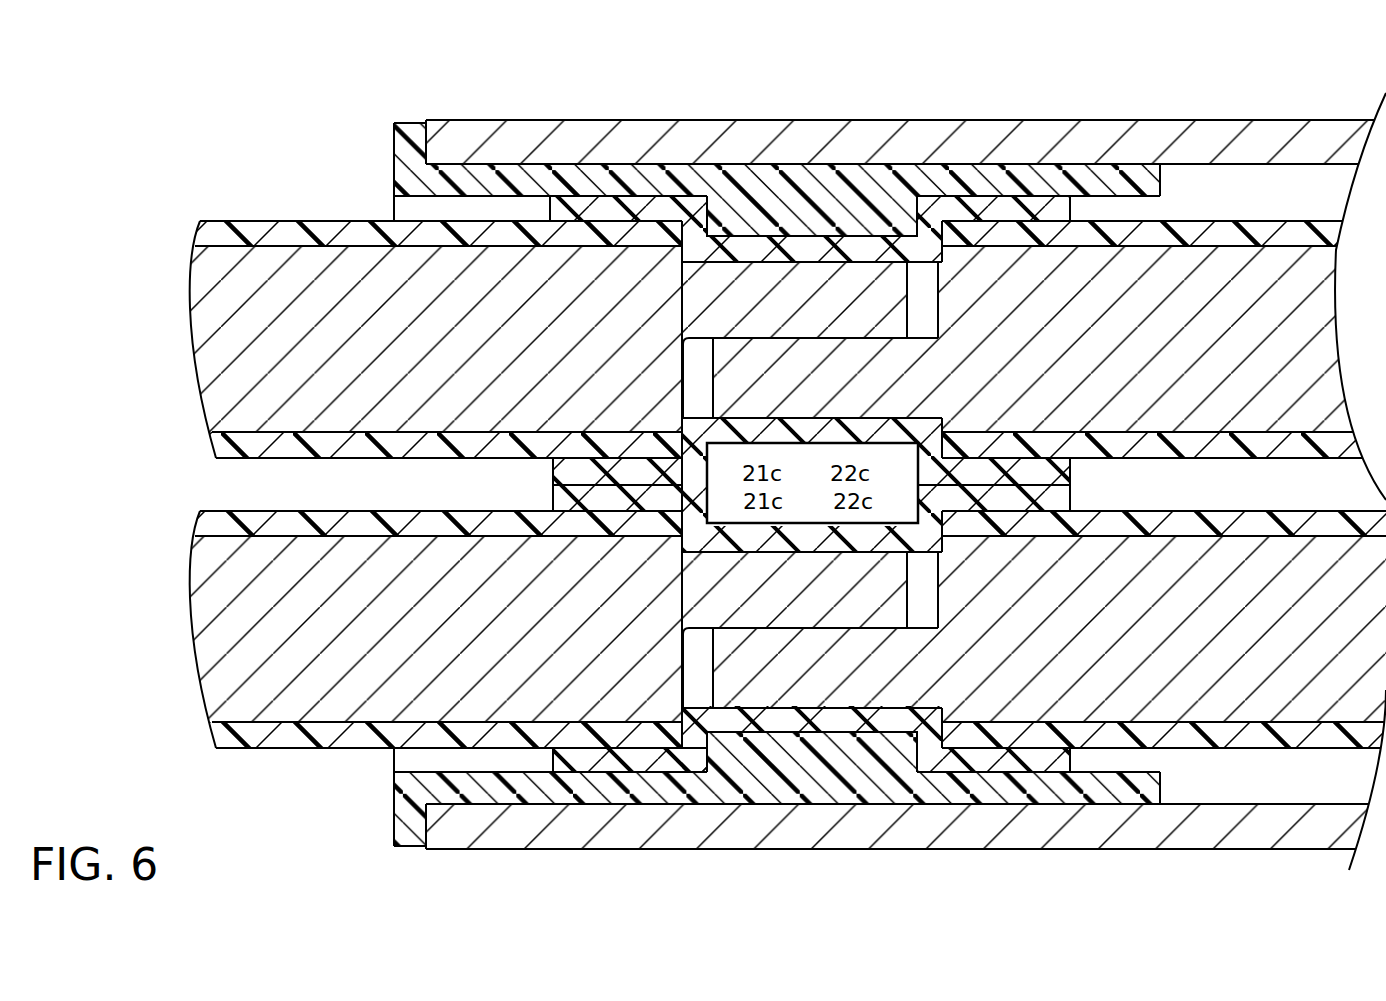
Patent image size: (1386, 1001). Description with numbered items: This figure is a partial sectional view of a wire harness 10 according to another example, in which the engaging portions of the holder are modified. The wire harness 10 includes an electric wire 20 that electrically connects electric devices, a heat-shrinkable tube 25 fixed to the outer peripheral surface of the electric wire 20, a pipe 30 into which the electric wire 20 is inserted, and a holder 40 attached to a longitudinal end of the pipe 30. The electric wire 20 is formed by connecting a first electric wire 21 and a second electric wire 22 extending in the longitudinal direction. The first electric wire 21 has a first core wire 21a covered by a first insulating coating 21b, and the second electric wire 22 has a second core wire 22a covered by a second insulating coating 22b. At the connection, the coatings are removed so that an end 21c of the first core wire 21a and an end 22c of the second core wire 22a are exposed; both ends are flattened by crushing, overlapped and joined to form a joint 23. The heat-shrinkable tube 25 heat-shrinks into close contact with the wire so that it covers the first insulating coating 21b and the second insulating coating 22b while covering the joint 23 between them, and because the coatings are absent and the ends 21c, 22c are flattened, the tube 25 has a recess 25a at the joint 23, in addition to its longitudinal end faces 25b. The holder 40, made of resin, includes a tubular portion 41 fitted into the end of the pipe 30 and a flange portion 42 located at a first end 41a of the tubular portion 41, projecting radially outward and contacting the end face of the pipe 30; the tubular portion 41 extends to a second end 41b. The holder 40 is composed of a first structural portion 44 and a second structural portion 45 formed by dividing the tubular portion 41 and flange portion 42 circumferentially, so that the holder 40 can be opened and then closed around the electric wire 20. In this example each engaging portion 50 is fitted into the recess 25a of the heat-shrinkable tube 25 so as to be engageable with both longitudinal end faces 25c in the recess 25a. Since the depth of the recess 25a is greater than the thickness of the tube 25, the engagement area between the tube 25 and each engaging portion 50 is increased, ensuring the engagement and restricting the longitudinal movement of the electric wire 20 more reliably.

The wire harness 10 is at (330, 100).
The electric wire 20 is at (209, 222).
The first electric wire 21 is at (307, 222).
The first core wire 21a is at (258, 270).
The first insulating coating 21b is at (352, 234).
The end of the first core wire 21c is at (762, 318).
The second electric wire 22 is at (1272, 222).
The second core wire 22a is at (1225, 270).
The second insulating coating 22b is at (1320, 235).
The end of the second core wire 22c is at (848, 405).
The joint 23 is at (857, 255).
The heat-shrinkable tube 25 is at (948, 210).
The recess 25a is at (830, 255).
The longitudinal end face of the heat-shrinkable tube 25b is at (548, 210).
The longitudinal end face in the recess 25c is at (703, 215).
The pipe 30 is at (1262, 120).
The holder 40 is at (612, 150).
The tubular portion 41 is at (650, 185).
The first end of the tubular portion 41a is at (394, 175).
The second end of the tubular portion 41b is at (1160, 182).
The flange portion 42 is at (406, 123).
The first structural portion 44 is at (1012, 186).
The second structural portion 45 is at (1013, 820).
The engaging portion 50 is at (758, 218).